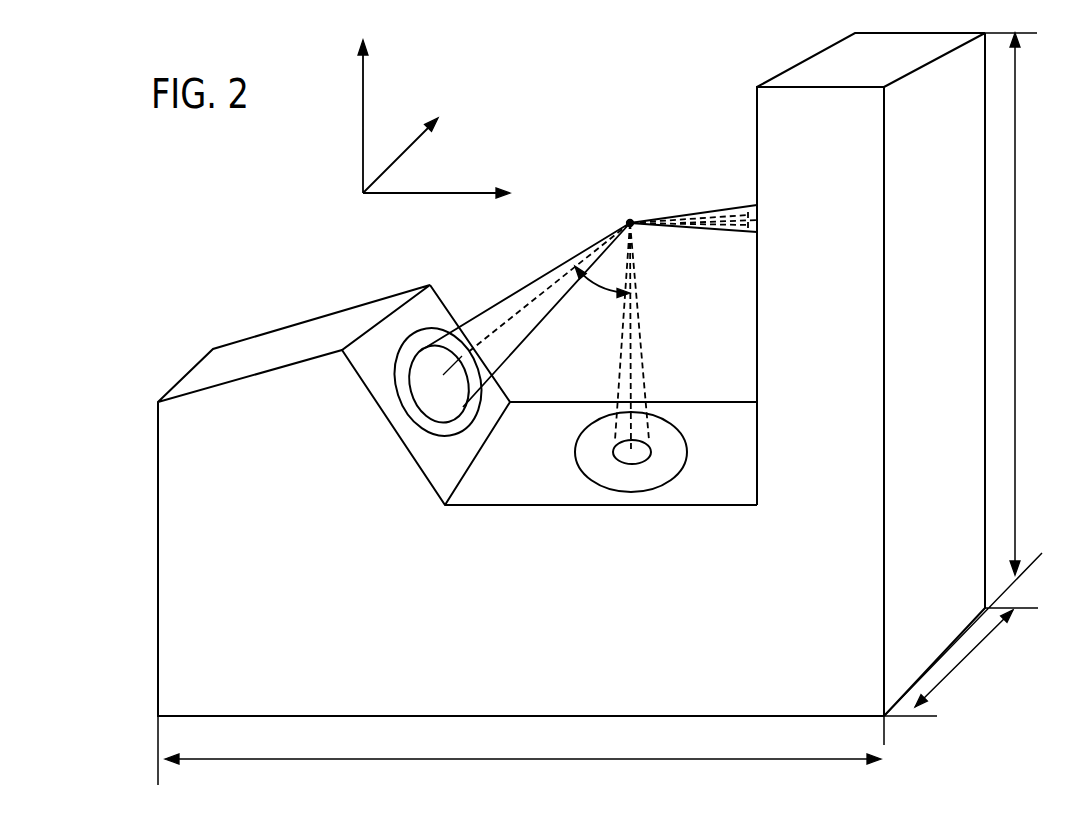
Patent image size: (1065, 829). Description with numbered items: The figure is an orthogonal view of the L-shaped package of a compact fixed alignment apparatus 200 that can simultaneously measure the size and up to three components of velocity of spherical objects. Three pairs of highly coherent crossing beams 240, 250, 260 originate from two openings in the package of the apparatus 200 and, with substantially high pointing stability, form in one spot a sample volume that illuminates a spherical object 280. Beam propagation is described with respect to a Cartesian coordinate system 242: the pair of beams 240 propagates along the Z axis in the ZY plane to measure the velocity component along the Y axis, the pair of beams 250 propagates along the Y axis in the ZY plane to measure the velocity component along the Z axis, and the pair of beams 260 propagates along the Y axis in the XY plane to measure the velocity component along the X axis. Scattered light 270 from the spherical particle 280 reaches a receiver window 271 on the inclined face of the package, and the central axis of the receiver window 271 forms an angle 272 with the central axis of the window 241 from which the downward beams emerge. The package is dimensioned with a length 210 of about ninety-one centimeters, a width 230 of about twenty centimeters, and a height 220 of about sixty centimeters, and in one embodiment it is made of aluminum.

The compact fixed alignment apparatus 200 is at (174, 298).
The length 210 is at (521, 753).
The height 220 is at (1016, 304).
The width 230 is at (963, 634).
The pair of beams 240 is at (641, 346).
The window 241 is at (667, 455).
The Cartesian coordinate system 242 is at (358, 161).
The pair of beams 250 is at (751, 232).
The pair of beams 260 is at (715, 207).
The scattered light 270 is at (508, 295).
The receiver window 271 is at (448, 405).
The angle 272 is at (602, 293).
The spherical object 280 is at (443, 375).